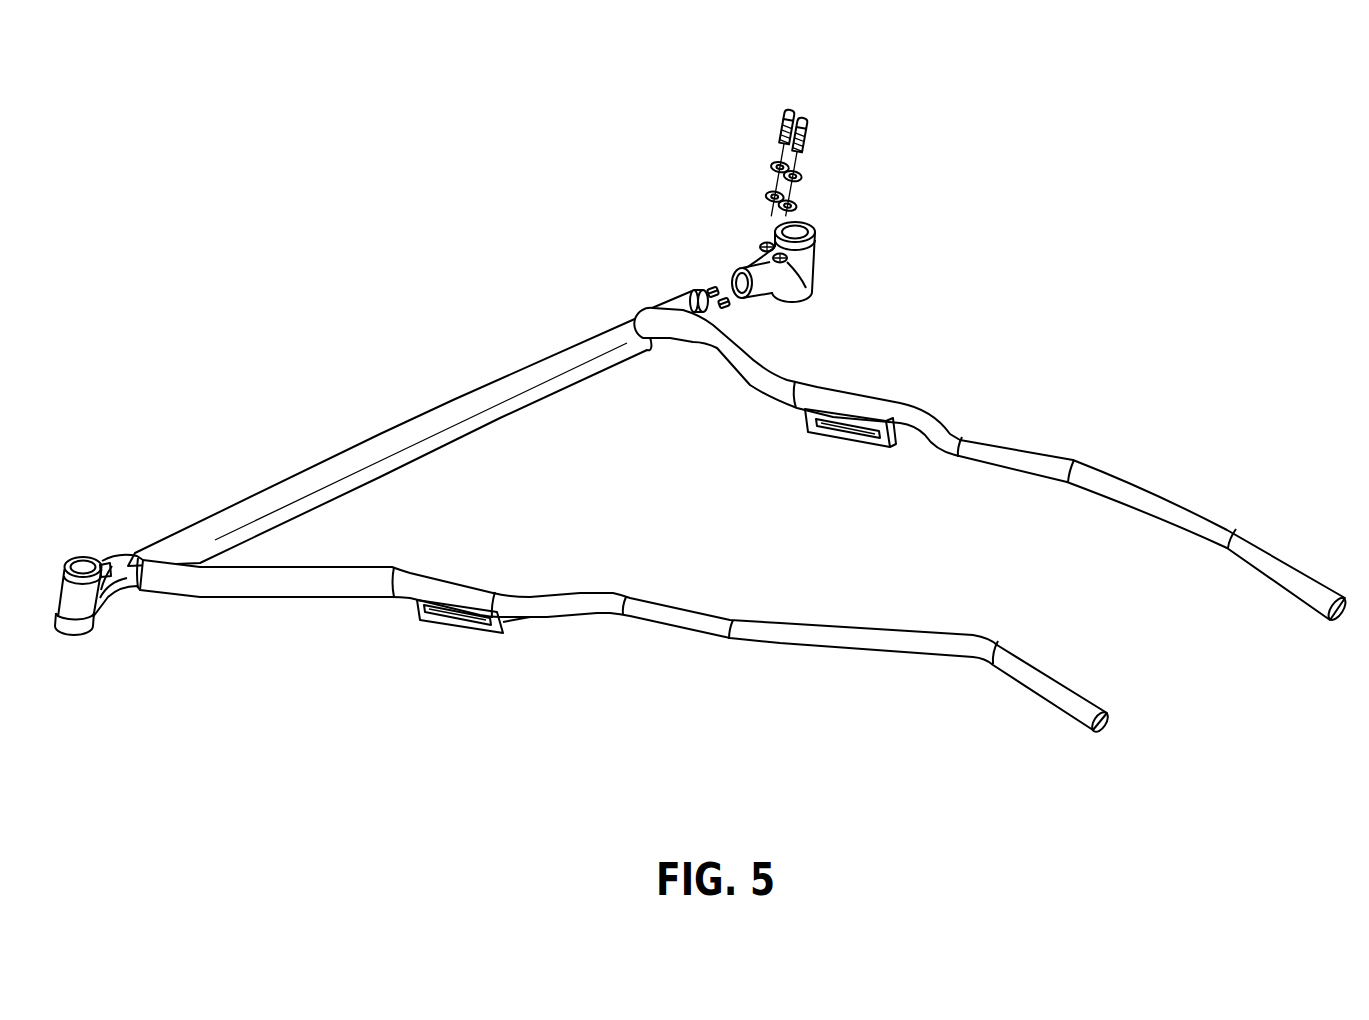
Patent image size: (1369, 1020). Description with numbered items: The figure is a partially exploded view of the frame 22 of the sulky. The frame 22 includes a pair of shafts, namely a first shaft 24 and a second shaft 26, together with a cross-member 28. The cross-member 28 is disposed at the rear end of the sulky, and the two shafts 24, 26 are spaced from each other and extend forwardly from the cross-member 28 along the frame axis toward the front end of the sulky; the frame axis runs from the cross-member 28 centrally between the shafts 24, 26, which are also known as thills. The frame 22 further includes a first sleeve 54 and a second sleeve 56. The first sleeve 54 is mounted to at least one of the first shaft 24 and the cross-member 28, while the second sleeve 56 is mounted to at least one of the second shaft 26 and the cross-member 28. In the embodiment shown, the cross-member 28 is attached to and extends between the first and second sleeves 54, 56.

The frame 22 is at (673, 212).
The first shaft 24 is at (873, 640).
The second shaft 26 is at (1044, 468).
The cross-member 28 is at (360, 461).
The first sleeve 54 is at (73, 612).
The second sleeve 56 is at (803, 268).